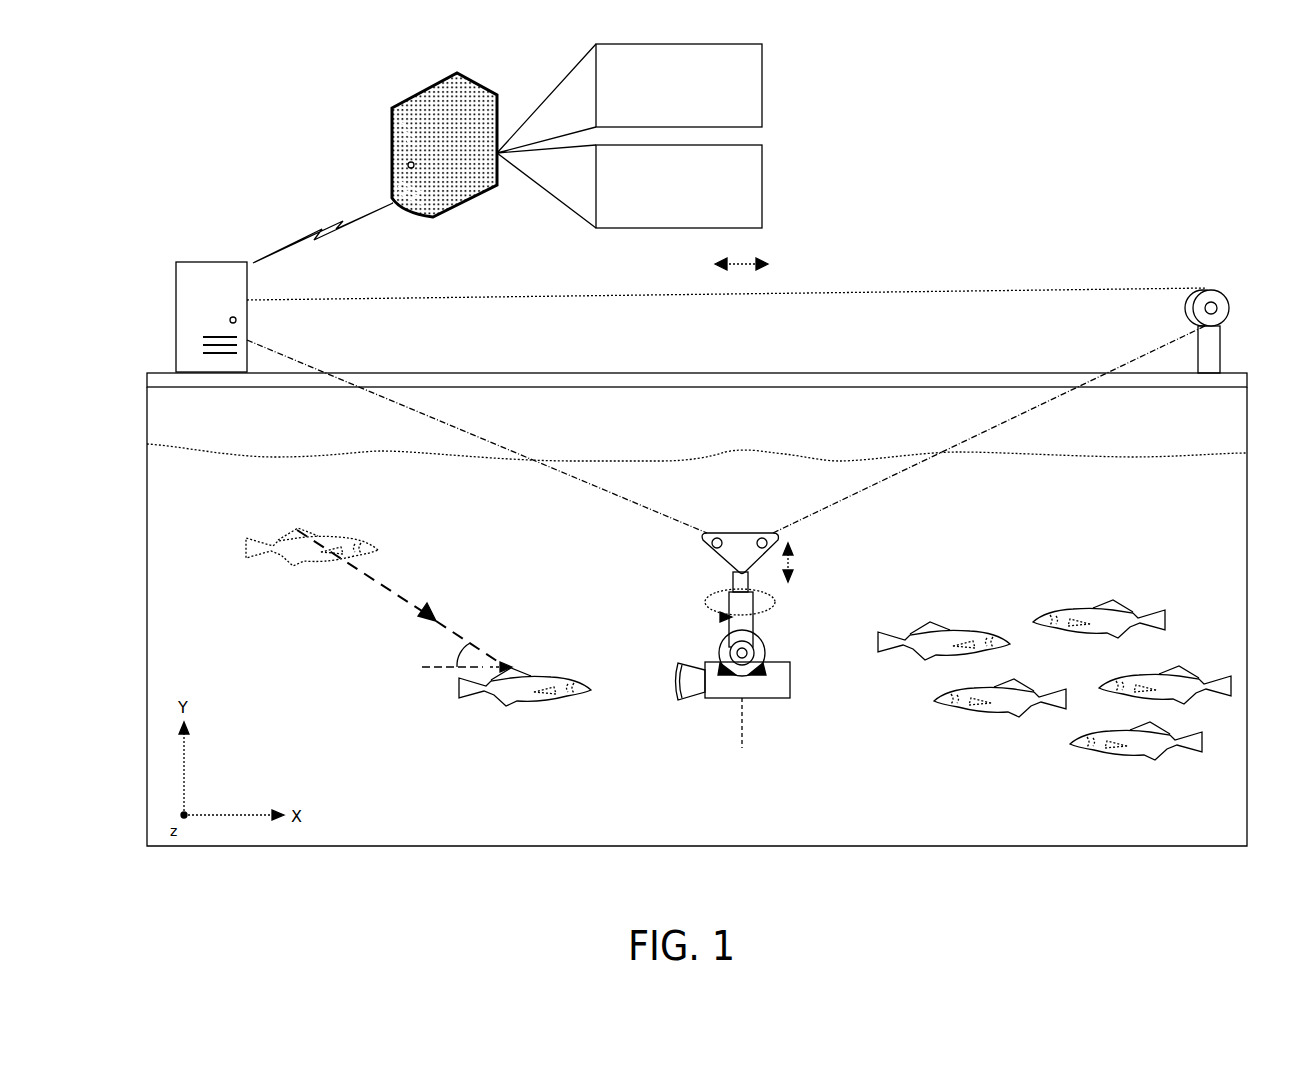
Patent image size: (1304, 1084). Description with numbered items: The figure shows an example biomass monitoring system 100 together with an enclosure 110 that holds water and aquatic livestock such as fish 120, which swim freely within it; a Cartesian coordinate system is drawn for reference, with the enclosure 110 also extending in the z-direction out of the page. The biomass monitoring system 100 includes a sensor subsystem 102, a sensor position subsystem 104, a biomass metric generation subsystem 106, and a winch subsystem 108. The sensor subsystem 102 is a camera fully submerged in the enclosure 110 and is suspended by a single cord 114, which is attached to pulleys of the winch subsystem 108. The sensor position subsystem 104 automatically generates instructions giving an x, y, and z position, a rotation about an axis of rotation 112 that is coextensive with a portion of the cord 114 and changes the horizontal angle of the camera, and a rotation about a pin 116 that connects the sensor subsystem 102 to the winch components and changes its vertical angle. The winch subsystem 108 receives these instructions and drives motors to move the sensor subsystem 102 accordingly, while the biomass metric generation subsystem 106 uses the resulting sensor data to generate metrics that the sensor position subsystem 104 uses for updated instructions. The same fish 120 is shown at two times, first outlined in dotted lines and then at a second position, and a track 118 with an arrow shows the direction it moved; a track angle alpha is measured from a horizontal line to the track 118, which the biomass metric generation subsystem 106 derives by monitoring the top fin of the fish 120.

The biomass monitoring system 100 is at (195, 121).
The sensor subsystem 102 is at (790, 673).
The sensor position subsystem 104 is at (679, 85).
The biomass metric generation subsystem 106 is at (679, 186).
The winch subsystem 108 is at (211, 317).
The enclosure 110 is at (148, 520).
The axis of rotation 112 is at (748, 722).
The cord 114 is at (953, 291).
The pin 116 is at (718, 645).
The track 118 is at (403, 598).
The fish 120 is at (322, 568).